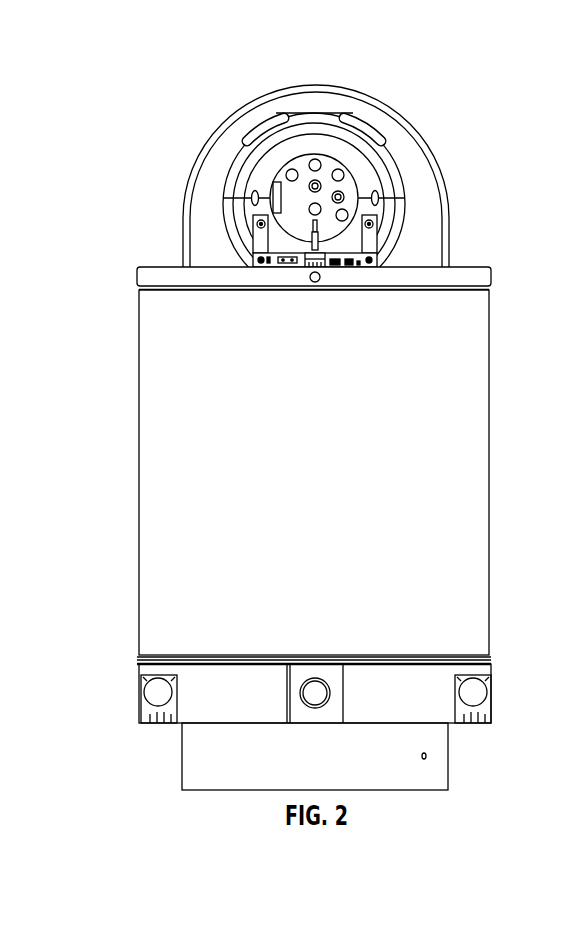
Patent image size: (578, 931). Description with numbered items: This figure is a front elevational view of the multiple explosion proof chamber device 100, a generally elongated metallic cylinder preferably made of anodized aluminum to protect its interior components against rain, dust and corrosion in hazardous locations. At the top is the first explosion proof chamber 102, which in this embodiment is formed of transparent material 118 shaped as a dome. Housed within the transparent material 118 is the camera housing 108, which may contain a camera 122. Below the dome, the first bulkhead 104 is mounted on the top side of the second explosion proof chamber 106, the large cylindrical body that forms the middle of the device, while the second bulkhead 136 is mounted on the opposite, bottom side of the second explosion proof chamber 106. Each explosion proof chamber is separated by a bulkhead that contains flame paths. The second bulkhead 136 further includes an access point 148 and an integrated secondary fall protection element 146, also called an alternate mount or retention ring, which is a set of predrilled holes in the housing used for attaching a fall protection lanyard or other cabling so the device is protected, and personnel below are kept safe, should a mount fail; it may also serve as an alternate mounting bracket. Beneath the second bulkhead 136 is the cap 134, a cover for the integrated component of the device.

The multiple explosion proof chamber device 100 is at (156, 113).
The first explosion proof chamber 102 is at (203, 235).
The first bulkhead 104 is at (490, 280).
The second explosion proof chamber 106 is at (157, 355).
The camera housing 108 is at (398, 173).
The transparent material 118 is at (443, 222).
The camera 122 is at (338, 140).
The cap 134 is at (192, 765).
The second bulkhead 136 is at (438, 678).
The integrated secondary fall protection element 146 is at (147, 710).
The access point 148 is at (323, 692).